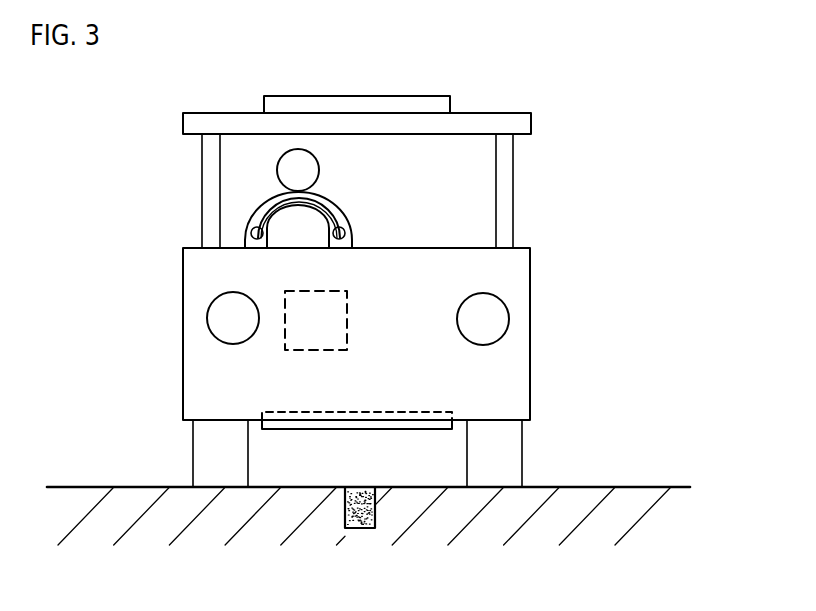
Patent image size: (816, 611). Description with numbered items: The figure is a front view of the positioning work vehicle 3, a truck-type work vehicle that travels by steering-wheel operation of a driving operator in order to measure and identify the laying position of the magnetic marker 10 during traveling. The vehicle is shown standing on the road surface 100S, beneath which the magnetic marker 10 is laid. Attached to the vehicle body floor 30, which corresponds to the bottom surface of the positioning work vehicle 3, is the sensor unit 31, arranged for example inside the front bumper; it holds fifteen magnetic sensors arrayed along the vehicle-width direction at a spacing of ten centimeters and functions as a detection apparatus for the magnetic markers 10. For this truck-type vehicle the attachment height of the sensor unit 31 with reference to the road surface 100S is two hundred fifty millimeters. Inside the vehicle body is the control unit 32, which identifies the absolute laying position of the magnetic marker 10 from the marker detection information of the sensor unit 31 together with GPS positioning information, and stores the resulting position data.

The positioning work vehicle 3 is at (562, 148).
The vehicle body floor 30 is at (490, 422).
The sensor unit 31 is at (312, 425).
The control unit 32 is at (307, 325).
The road surface 100S is at (641, 487).
The magnetic marker 10 is at (368, 512).